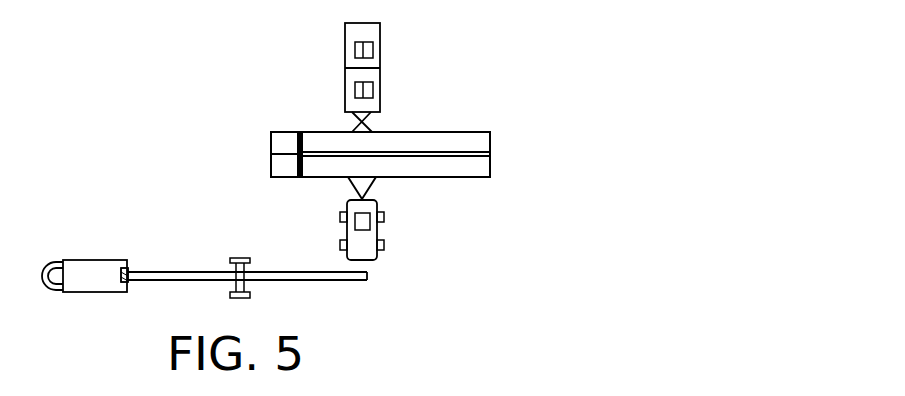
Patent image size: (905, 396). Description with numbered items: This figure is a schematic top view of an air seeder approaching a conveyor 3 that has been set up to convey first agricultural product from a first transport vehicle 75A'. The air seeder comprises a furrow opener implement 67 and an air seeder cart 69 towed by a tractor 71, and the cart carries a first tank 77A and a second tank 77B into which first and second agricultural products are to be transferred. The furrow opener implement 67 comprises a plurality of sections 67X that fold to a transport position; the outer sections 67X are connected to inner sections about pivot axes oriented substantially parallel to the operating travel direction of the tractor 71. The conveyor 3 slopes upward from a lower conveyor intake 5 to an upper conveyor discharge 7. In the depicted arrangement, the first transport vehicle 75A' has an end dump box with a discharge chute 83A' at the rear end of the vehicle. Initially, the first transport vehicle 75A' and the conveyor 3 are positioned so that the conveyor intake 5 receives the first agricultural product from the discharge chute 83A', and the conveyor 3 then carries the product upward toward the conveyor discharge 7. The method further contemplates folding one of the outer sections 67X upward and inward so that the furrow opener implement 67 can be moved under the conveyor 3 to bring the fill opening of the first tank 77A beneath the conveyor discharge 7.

The air seeder cart 69 is at (380, 26).
The second tank 77B is at (380, 47).
The first tank 77A is at (380, 87).
The furrow opener implement 67 is at (490, 136).
The outer section 67X is at (287, 178).
The tractor 71 is at (378, 228).
The first transport vehicle 75A' is at (84, 245).
The discharge chute 83A' is at (163, 256).
The conveyor intake 5 is at (128, 282).
The conveyor 3 is at (267, 280).
The conveyor discharge 7 is at (367, 275).